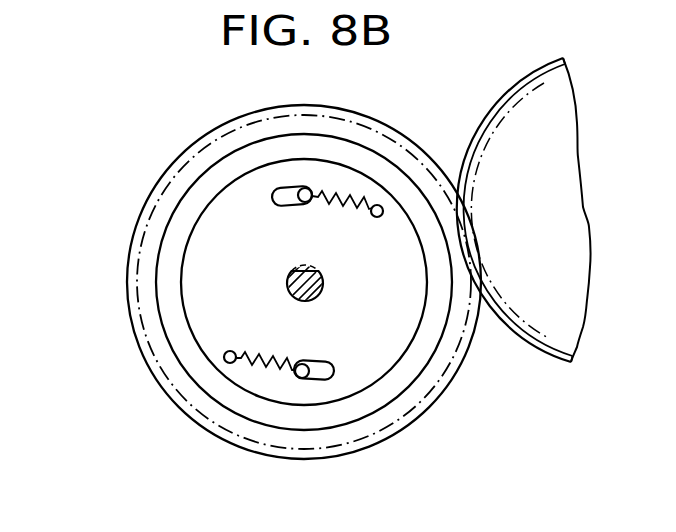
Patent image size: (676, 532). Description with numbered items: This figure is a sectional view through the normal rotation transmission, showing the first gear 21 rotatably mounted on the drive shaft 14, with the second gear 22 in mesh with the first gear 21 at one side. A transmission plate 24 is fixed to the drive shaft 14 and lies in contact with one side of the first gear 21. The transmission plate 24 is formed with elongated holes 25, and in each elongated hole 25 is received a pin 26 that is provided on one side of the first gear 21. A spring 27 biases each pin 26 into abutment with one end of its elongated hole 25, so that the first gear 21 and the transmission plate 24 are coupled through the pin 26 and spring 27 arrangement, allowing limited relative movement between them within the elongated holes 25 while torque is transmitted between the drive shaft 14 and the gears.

The drive shaft 14 is at (287, 283).
The first gear 21 is at (413, 418).
The second gear 22 is at (508, 123).
The transmission plate 24 is at (218, 247).
The elongated hole 25 is at (277, 187).
The pin 26 is at (305, 188).
The spring 27 is at (353, 194).